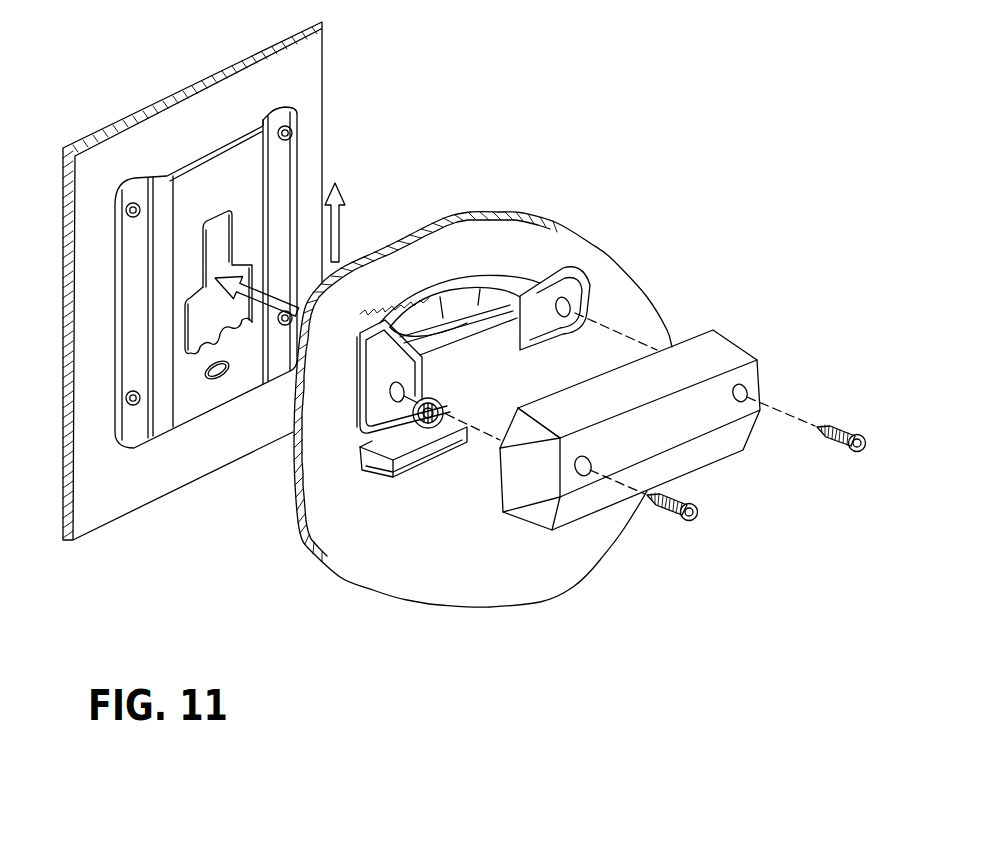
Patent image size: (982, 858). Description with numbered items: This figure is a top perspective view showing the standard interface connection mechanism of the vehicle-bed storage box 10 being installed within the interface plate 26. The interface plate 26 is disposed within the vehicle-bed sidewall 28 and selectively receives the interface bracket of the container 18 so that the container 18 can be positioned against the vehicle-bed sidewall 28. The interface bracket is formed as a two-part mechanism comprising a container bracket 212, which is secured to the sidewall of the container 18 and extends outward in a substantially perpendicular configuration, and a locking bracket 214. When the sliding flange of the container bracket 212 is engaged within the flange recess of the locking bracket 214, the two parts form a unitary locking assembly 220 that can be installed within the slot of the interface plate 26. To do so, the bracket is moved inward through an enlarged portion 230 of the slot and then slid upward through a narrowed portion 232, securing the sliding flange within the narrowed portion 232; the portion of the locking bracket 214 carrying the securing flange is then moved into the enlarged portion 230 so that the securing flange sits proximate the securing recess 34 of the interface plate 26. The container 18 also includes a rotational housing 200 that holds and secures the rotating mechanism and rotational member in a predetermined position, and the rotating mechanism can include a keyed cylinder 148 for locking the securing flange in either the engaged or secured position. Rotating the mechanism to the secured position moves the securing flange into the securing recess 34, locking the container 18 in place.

The vehicle-bed storage box 10 is at (555, 202).
The container 18 is at (495, 240).
The interface plate 26 is at (305, 120).
The vehicle-bed sidewall 28 is at (176, 127).
The securing recess 34 is at (228, 327).
The keyed cylinder 148 is at (435, 428).
The rotational housing 200 is at (727, 330).
The container bracket 212 is at (567, 292).
The locking bracket 214 is at (407, 462).
The unitary locking assembly 220 is at (350, 438).
The enlarged portion 230 is at (190, 335).
The narrowed portion 232 is at (200, 257).